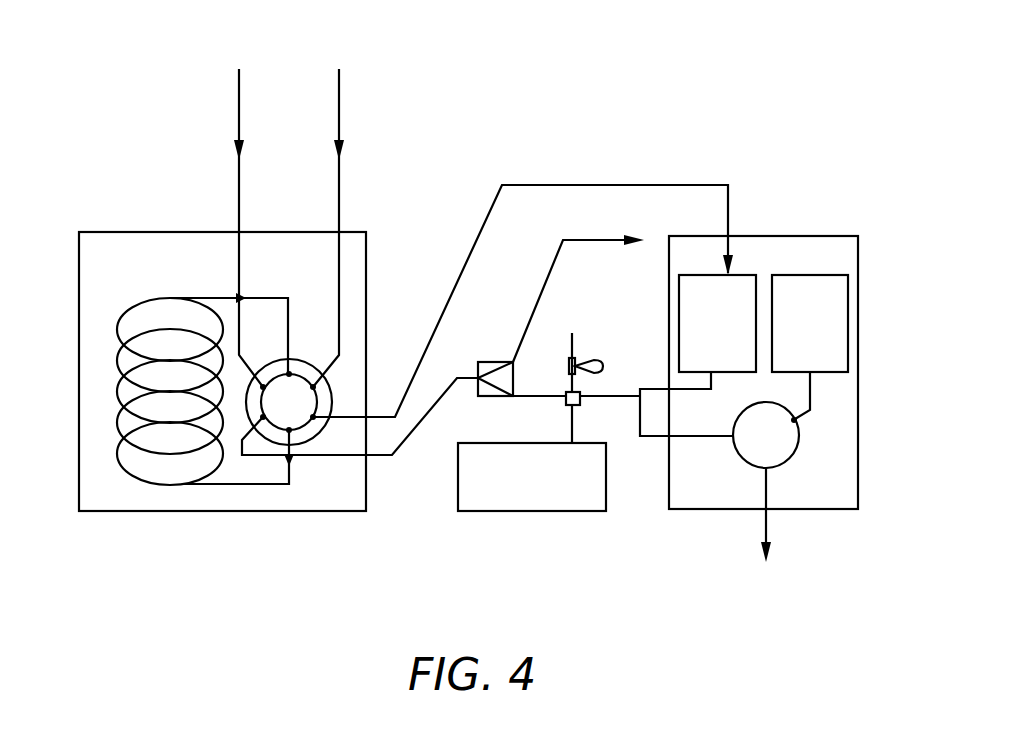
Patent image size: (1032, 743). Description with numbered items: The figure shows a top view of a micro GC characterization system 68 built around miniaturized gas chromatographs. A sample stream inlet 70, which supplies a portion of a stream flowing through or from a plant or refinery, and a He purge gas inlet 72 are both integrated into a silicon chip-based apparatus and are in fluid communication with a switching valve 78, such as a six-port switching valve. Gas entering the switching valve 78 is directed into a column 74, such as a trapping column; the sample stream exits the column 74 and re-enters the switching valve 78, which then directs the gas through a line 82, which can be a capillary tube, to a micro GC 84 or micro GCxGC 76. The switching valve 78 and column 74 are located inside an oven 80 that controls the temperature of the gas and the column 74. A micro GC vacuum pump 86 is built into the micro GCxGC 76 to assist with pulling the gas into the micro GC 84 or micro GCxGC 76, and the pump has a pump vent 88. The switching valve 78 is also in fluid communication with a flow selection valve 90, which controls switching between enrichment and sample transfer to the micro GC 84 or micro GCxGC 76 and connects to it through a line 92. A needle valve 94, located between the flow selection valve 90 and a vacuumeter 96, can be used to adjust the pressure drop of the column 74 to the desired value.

The micro GC characterization system 68 is at (810, 143).
The sample stream inlet 70 is at (239, 177).
The He purge gas inlet 72 is at (340, 190).
The column 74 is at (170, 298).
The micro GCxGC 76 is at (687, 236).
The switching valve 78 is at (296, 392).
The oven 80 is at (93, 232).
The line 82 is at (672, 186).
The micro gas chromatograph 84 is at (742, 275).
The micro GC vacuum pump 86 is at (748, 463).
The pump vent 88 is at (762, 540).
The flow selection valve 90 is at (497, 362).
The split line 92 is at (547, 283).
The needle valve 94 is at (597, 356).
The vacuumeter 96 is at (533, 512).